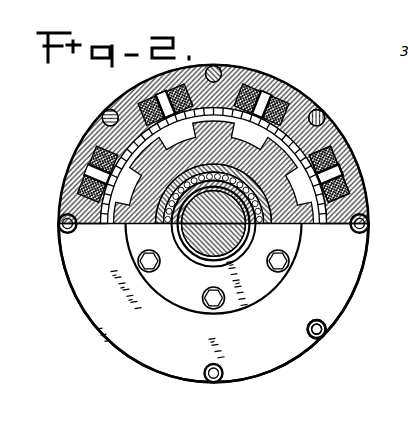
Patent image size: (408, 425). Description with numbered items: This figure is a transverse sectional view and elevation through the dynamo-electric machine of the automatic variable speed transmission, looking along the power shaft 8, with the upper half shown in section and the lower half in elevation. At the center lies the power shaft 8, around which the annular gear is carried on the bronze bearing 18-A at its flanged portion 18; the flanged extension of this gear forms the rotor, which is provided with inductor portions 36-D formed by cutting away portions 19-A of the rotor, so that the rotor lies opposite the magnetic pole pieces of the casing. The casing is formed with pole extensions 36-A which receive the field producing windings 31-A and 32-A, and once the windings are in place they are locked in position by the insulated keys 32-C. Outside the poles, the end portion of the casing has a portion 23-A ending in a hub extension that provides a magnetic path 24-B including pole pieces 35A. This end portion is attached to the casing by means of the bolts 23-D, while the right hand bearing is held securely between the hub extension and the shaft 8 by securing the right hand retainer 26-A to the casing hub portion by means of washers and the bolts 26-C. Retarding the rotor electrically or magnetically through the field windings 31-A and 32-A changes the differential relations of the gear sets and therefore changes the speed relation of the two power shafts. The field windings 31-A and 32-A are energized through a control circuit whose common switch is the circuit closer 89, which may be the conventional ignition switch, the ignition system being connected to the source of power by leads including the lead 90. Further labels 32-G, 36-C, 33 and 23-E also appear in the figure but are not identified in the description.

The field producing winding 31-A is at (250, 92).
The magnetic path 24-B is at (104, 128).
The pole pieces 35A is at (96, 140).
The pole extensions 36-A is at (126, 103).
The field coil 32-G is at (160, 86).
The inductor portions 36-D is at (292, 118).
The insulated keys 32-C is at (270, 100).
The pole piece 36-C is at (330, 140).
The field producing winding 32-A is at (352, 195).
The cut-away portions of the rotor 19-A is at (326, 153).
The circuit closer 89 is at (345, 165).
The stator frame 33 is at (350, 180).
The lead 90 is at (116, 228).
The bronze bearing 18-A is at (254, 228).
The power shaft 8 is at (186, 248).
The portion of the end portion 23-A is at (72, 262).
The right hand retainer 26-A is at (178, 300).
The flanged portion 18 is at (150, 250).
The bolts 26-C is at (283, 265).
The bolts 23-D is at (326, 331).
The mounting hole bore 23-E is at (318, 338).